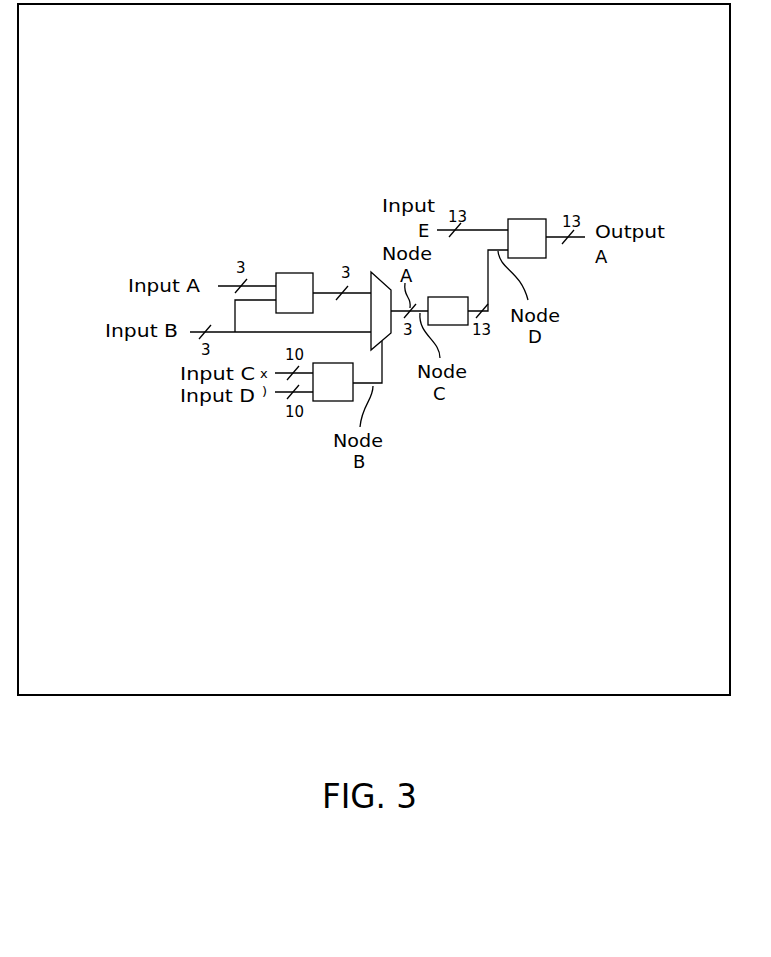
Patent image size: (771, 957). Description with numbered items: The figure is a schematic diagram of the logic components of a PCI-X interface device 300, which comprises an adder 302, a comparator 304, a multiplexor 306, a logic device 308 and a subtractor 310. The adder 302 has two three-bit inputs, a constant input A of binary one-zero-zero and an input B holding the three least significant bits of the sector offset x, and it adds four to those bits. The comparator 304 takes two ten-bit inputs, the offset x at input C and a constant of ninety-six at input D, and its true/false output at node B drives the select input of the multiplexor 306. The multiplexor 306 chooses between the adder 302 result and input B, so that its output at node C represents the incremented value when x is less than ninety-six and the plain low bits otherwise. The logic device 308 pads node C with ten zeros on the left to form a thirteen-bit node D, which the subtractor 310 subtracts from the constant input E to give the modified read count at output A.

The PCI-X interface device 300 is at (305, 50).
The adder 302 is at (292, 273).
The comparator 304 is at (332, 401).
The multiplexor 306 is at (387, 337).
The logic device 308 is at (459, 325).
The subtractor 310 is at (525, 219).